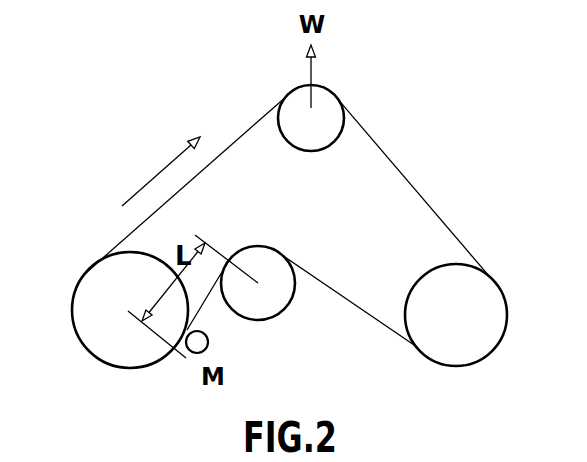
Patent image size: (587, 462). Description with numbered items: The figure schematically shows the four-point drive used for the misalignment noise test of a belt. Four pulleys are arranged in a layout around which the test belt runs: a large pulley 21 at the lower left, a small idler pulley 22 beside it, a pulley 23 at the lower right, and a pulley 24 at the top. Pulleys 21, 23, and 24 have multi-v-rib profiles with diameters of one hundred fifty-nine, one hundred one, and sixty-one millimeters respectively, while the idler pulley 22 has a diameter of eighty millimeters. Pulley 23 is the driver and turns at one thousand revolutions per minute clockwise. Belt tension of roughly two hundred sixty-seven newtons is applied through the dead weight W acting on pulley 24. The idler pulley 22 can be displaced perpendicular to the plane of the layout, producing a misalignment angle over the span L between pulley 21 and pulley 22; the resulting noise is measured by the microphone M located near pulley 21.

The pulley 21 is at (96, 306).
The idler pulley 22 is at (244, 308).
The driver pulley 23 is at (444, 327).
The pulley 24 is at (298, 142).